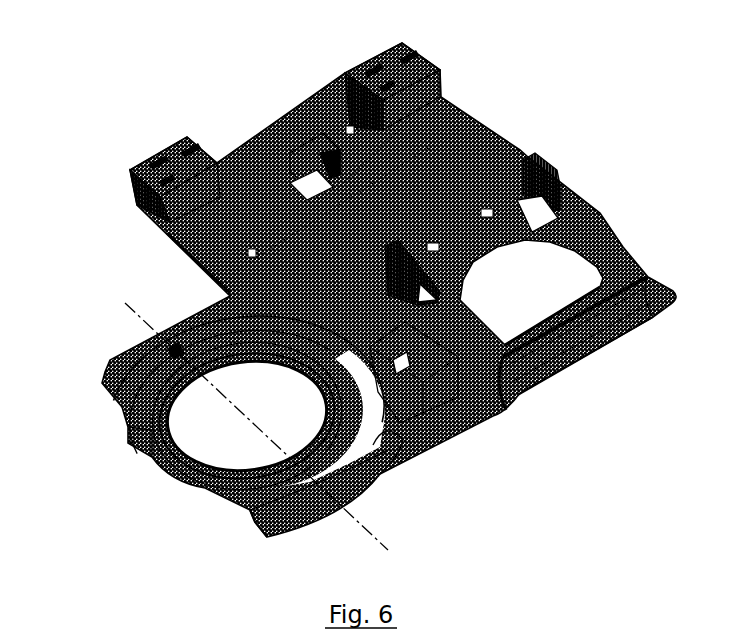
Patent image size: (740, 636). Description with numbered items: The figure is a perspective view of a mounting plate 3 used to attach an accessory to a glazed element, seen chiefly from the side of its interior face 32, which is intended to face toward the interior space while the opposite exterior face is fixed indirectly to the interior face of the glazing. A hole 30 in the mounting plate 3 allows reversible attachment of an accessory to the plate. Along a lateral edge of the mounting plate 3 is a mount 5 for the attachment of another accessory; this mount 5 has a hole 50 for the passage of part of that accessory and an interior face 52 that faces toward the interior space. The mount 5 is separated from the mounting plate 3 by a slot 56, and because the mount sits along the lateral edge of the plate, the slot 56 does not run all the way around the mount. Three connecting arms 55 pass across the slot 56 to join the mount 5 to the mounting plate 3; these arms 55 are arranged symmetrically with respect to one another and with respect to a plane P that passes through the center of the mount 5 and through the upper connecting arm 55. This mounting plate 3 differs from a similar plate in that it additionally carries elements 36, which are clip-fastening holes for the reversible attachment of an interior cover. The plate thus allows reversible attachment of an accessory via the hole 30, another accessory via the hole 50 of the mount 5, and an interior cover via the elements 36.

The mounting plate 3 is at (536, 86).
The mount 5 is at (104, 322).
The hole 30 is at (568, 278).
The interior face 32 is at (475, 176).
The elements (clip-fastening holes) 36 is at (165, 197).
The hole 50 is at (220, 440).
The interior face 52 is at (143, 417).
The connecting arms 55 is at (177, 355).
The slot 56 is at (147, 387).
The plane P is at (378, 537).